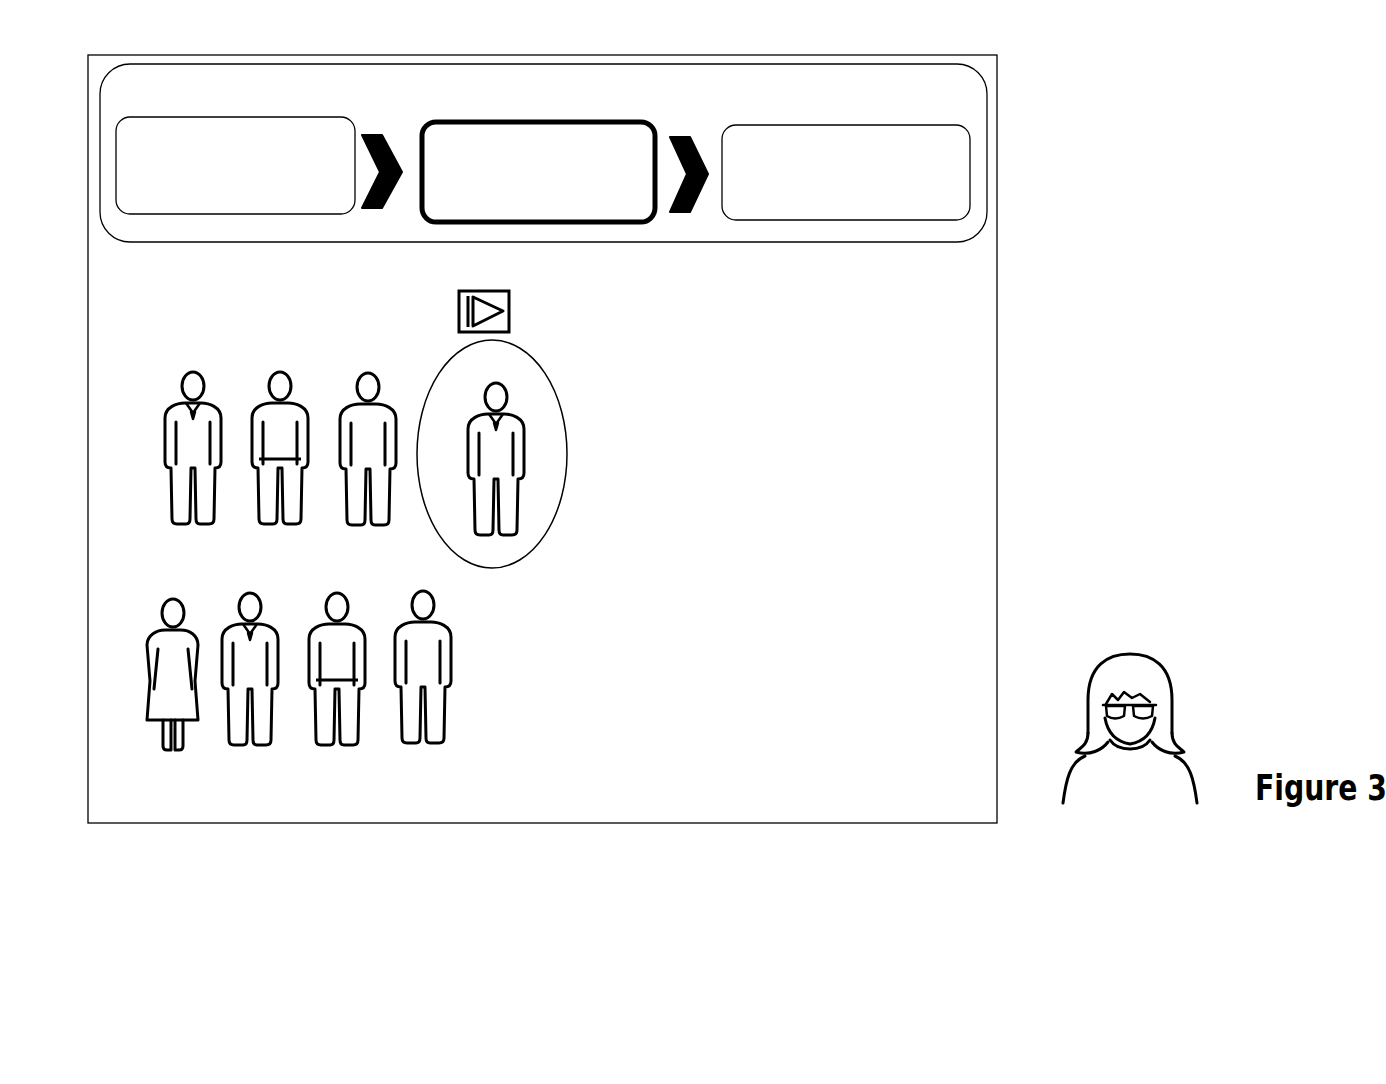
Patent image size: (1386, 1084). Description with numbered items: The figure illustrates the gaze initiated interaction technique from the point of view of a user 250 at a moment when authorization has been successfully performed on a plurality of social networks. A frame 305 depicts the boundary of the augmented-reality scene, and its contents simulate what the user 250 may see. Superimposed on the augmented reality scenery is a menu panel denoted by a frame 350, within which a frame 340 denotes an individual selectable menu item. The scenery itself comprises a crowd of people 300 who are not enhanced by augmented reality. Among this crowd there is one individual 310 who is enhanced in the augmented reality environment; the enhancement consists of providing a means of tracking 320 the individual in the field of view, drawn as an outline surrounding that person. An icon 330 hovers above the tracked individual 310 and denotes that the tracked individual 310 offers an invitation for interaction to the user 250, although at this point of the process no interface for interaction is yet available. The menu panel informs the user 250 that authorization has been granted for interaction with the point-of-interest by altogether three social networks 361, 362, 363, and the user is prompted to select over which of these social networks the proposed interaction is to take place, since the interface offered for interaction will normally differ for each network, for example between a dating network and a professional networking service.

The user 250 is at (1136, 639).
The group of people in field of view 300 is at (279, 349).
The frame 305 is at (999, 429).
The individual 310 is at (540, 467).
The means of tracking 320 is at (573, 444).
The icon 330 is at (522, 311).
The frame 340 is at (616, 226).
The frame 350 is at (846, 244).
The social network 361 is at (163, 178).
The social network 362 is at (466, 179).
The social network 363 is at (770, 180).